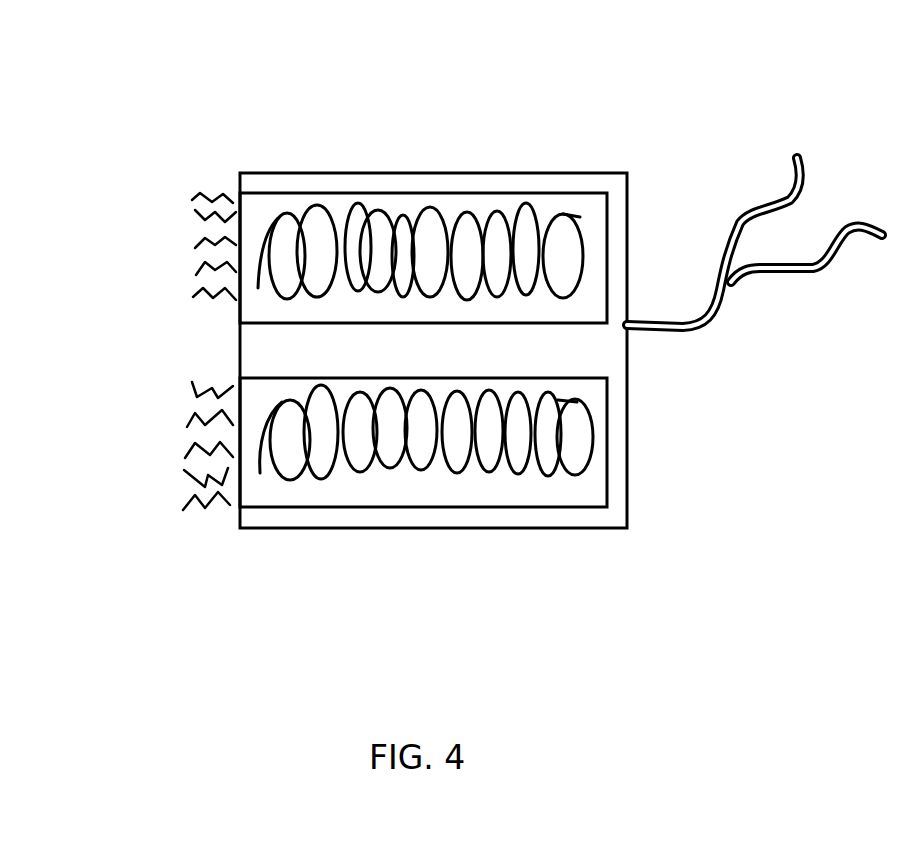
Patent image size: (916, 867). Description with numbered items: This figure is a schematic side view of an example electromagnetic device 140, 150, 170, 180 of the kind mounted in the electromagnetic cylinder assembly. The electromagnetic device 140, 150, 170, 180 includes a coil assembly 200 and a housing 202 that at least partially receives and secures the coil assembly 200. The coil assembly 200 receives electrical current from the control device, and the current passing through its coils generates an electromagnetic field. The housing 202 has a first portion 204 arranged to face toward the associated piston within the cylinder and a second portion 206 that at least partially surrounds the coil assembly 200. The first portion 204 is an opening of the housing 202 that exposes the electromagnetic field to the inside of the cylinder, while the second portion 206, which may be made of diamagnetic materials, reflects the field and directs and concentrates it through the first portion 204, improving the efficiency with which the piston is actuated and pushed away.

The electromagnetic device 140 is at (469, 304).
The electromagnetic device 150 is at (469, 304).
The electromagnetic device 170 is at (469, 304).
The electromagnetic device 180 is at (198, 99).
The coil assembly 200 is at (327, 213).
The housing 202 is at (470, 145).
The first portion 204 is at (240, 195).
The second portion 206 is at (583, 180).